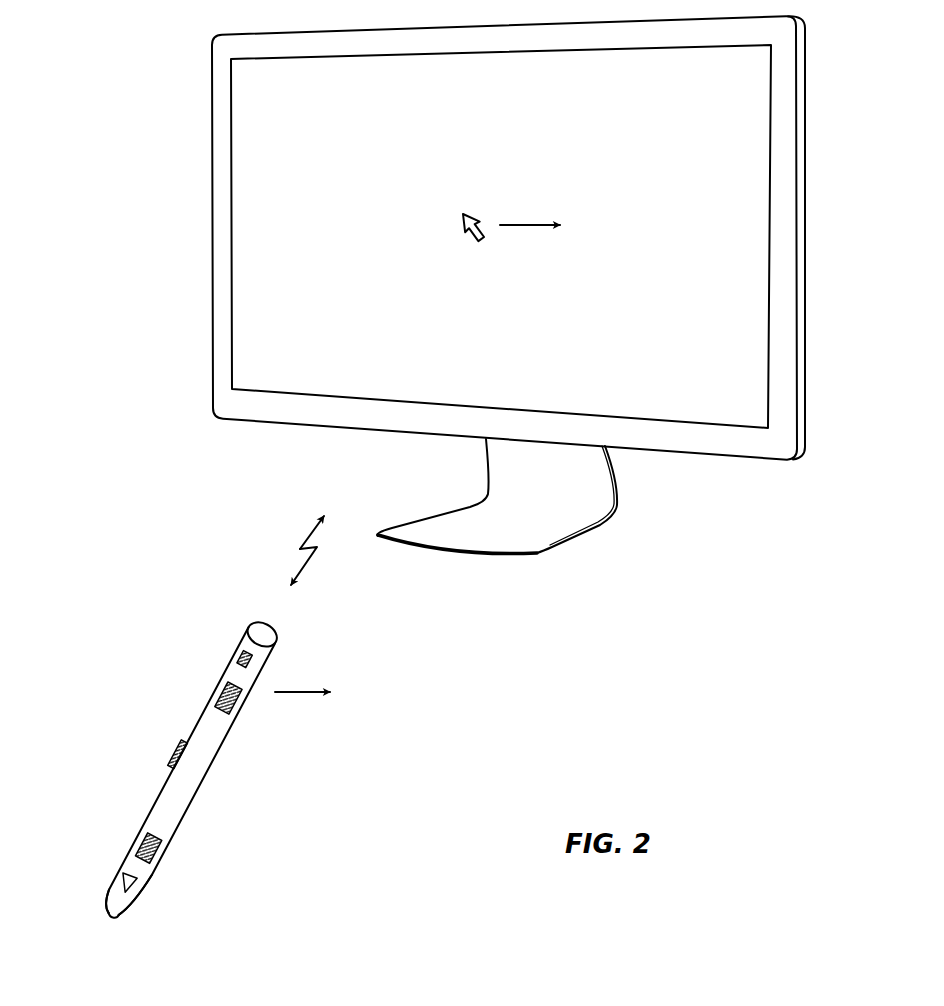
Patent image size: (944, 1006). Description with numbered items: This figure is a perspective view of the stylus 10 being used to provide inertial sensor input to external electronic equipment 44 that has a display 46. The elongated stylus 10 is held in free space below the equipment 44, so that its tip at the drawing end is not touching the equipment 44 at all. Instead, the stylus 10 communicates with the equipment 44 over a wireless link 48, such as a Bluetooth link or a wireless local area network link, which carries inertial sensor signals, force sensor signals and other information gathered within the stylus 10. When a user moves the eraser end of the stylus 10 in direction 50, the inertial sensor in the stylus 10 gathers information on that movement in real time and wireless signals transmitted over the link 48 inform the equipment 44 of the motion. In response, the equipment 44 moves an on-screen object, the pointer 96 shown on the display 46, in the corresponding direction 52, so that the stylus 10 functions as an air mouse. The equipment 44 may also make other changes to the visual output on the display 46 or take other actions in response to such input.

The stylus 10 is at (150, 769).
The external electronic equipment 44 is at (810, 232).
The display 46 is at (737, 177).
The wireless link 48 is at (313, 557).
The direction 50 is at (307, 695).
The direction 52 is at (526, 228).
The pointer 96 is at (468, 237).